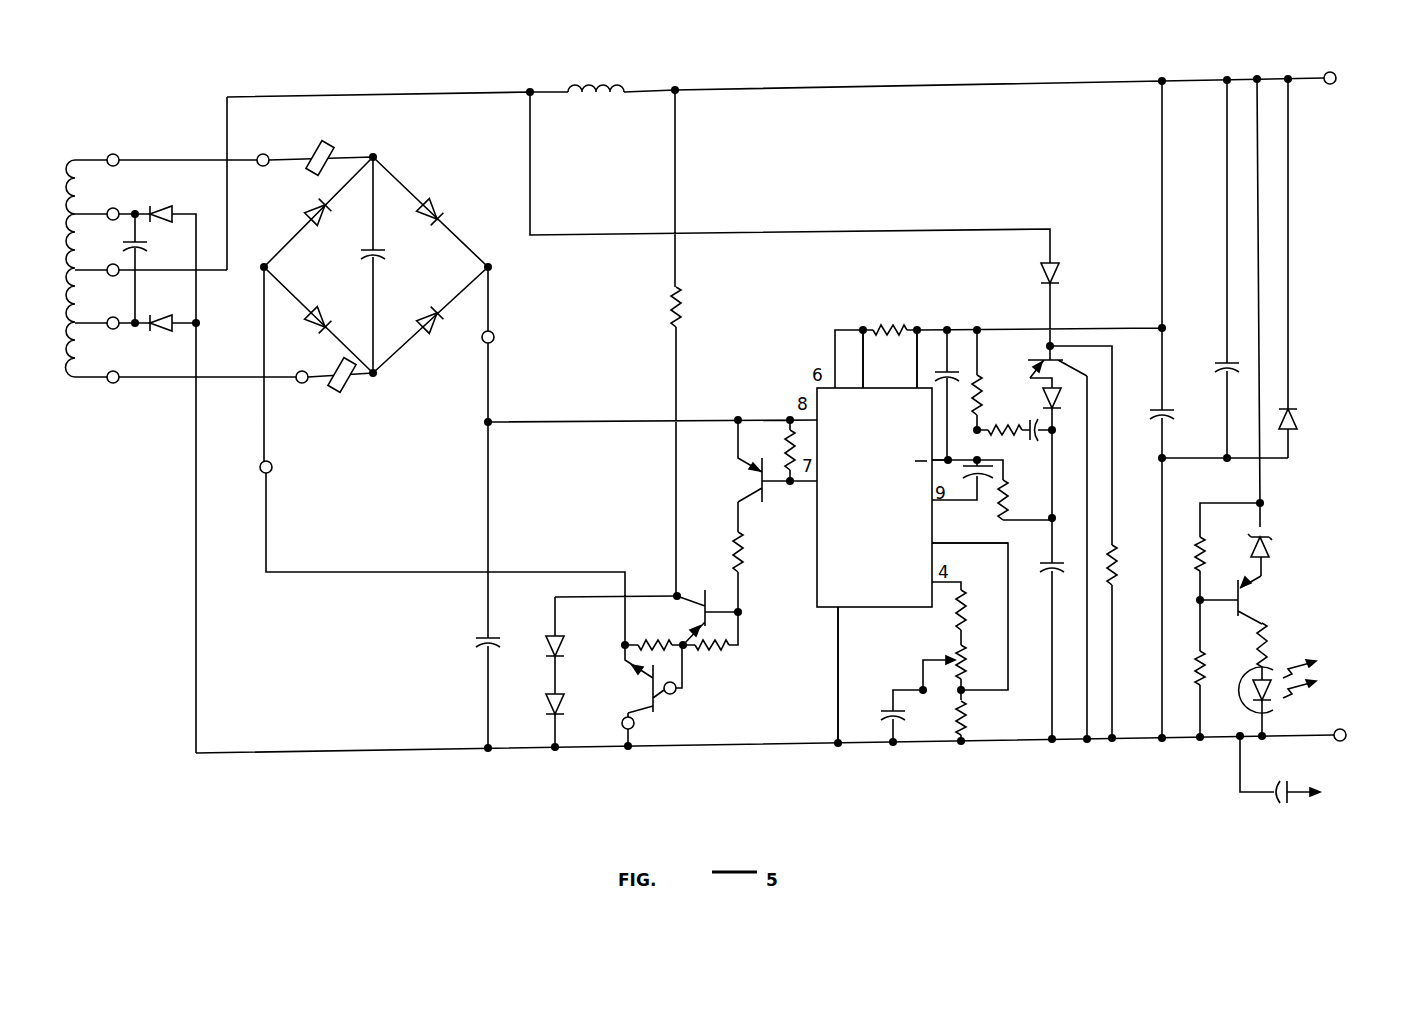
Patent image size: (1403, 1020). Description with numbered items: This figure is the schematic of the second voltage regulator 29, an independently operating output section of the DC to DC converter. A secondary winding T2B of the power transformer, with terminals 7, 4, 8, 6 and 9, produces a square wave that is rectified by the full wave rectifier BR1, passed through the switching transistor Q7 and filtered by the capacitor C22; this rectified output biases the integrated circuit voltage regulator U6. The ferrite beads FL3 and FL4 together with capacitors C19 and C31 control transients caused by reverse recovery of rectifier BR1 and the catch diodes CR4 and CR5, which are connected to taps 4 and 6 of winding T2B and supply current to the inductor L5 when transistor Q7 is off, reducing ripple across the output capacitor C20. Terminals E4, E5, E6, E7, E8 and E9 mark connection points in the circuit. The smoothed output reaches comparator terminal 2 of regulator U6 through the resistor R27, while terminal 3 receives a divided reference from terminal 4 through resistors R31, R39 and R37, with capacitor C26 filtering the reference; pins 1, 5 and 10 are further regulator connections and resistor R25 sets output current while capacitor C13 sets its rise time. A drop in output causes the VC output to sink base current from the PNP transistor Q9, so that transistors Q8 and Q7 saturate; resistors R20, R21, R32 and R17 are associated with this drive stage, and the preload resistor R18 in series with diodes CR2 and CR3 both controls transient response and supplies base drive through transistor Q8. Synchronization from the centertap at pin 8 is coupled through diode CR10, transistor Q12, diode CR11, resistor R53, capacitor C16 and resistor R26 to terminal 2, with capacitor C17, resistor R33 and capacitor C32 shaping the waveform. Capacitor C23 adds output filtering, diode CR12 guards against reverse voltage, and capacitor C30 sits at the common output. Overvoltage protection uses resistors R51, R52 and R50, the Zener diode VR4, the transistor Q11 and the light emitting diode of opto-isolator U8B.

The second voltage regulator 29 is at (808, 68).
The secondary winding T2B is at (84, 248).
The transformer terminal 7 is at (108, 151).
The tap 4 is at (108, 206).
The pin 8 is at (108, 262).
The tap 6 is at (108, 315).
The transformer terminal 9 is at (108, 369).
The regulator pin 1 is at (913, 359).
The terminal 2 is at (940, 449).
The terminal 3 is at (970, 534).
The regulator pin 5 is at (845, 675).
The terminal 10 is at (850, 359).
The catch diode CR4 is at (164, 202).
The catch diode CR5 is at (162, 312).
The capacitor C31 is at (152, 255).
The terminal E4 is at (261, 149).
The terminal E5 is at (296, 365).
The terminal E6 is at (642, 728).
The terminal E7 is at (502, 338).
The terminal E8 is at (675, 699).
The terminal E9 is at (280, 468).
The ferrite bead FL3 is at (327, 145).
The ferrite bead FL4 is at (340, 387).
The full wave rectifier BR1 is at (376, 257).
The capacitor C19 is at (391, 263).
The inductor L5 is at (596, 104).
The preload resistor R18 is at (698, 307).
The capacitor C22 is at (470, 633).
The diode CR2 is at (574, 646).
The diode CR3 is at (574, 707).
The switching transistor Q7 is at (632, 679).
The transistor Q8 is at (697, 617).
The PNP transistor Q9 is at (739, 461).
The resistor R32 is at (652, 631).
The resistor R17 is at (715, 657).
The resistor R21 is at (720, 552).
The resistor R20 is at (771, 450).
The voltage regulator U6 is at (874, 497).
The resistor R25 is at (890, 318).
The capacitor C32 is at (952, 359).
The resistor R27 is at (995, 395).
The resistor R53 is at (1004, 418).
The capacitor C16 is at (1031, 441).
The capacitor C13 is at (964, 476).
The resistor R26 is at (1020, 500).
The resistor R31 is at (980, 610).
The resistor R39 is at (964, 667).
The resistor R37 is at (981, 718).
The capacitor C26 is at (908, 717).
The diode CR10 is at (1076, 271).
The transistor Q12 is at (1066, 368).
The diode CR11 is at (1064, 402).
The capacitor C17 is at (1042, 580).
The resistor R33 is at (1131, 565).
The capacitor C20 is at (1147, 404).
The capacitor C23 is at (1209, 354).
The diode CR12 is at (1310, 409).
The Zener diode VR4 is at (1282, 541).
The resistor R51 is at (1219, 554).
The resistor R52 is at (1220, 667).
The transistor Q11 is at (1260, 600).
The resistor R50 is at (1282, 645).
The opto-isolator U8B is at (1277, 682).
The capacitor C30 is at (1279, 783).